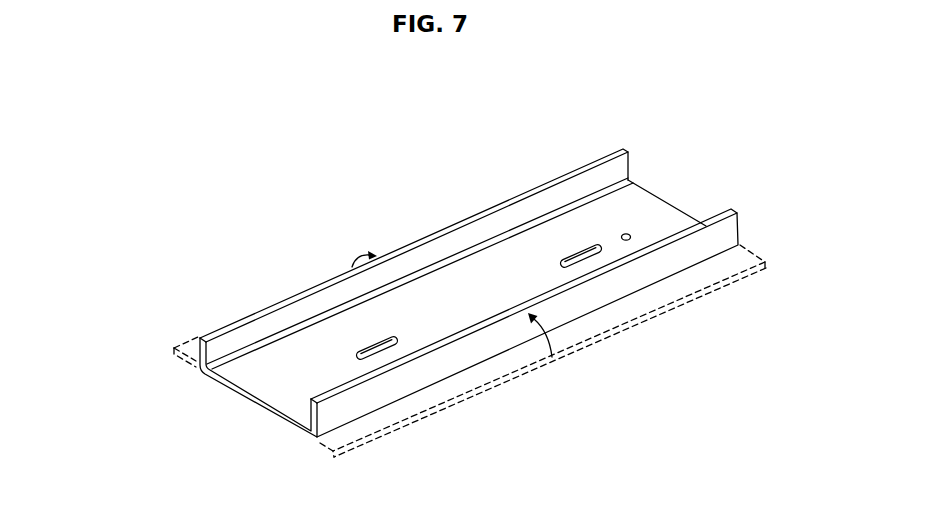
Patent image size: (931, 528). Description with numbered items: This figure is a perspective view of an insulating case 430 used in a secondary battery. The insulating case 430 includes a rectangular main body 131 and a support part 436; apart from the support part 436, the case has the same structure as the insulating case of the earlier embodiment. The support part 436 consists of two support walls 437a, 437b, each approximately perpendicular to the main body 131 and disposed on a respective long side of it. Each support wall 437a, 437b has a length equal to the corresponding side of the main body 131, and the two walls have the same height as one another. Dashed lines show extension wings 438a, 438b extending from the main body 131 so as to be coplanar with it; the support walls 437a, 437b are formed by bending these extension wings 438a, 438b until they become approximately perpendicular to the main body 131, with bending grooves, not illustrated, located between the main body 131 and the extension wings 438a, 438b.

The insulating case 430 is at (156, 283).
The main body 131 is at (270, 393).
The support part 436 is at (469, 260).
The support wall 437a is at (662, 252).
The support wall 437b is at (540, 200).
The extension wing 438a is at (326, 447).
The extension wing 438b is at (174, 350).